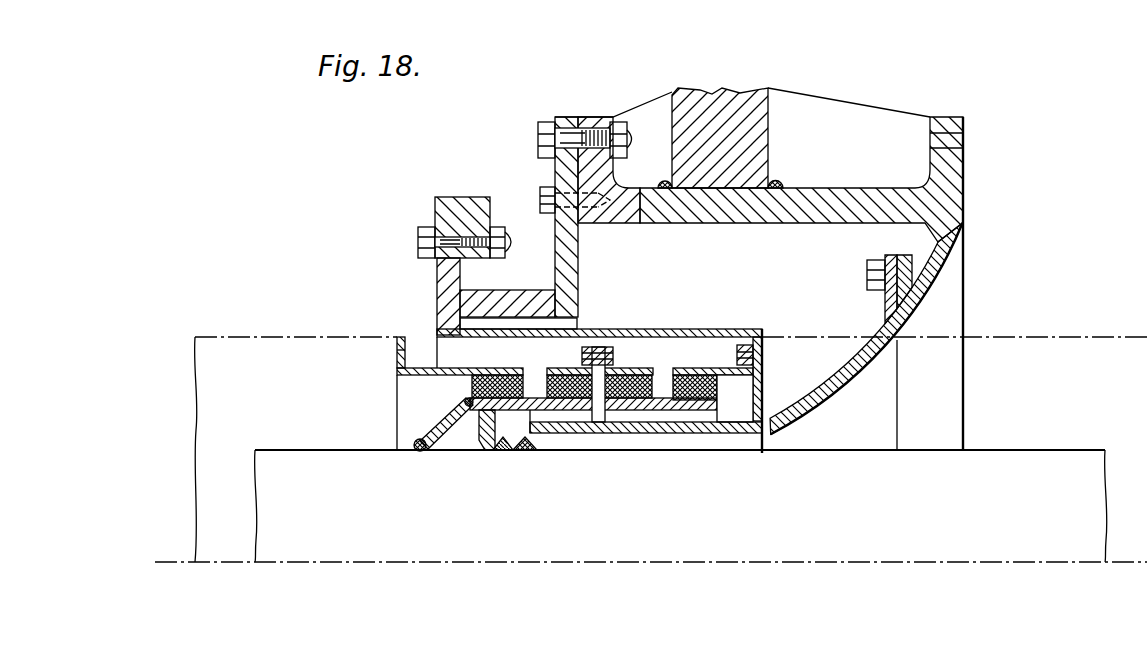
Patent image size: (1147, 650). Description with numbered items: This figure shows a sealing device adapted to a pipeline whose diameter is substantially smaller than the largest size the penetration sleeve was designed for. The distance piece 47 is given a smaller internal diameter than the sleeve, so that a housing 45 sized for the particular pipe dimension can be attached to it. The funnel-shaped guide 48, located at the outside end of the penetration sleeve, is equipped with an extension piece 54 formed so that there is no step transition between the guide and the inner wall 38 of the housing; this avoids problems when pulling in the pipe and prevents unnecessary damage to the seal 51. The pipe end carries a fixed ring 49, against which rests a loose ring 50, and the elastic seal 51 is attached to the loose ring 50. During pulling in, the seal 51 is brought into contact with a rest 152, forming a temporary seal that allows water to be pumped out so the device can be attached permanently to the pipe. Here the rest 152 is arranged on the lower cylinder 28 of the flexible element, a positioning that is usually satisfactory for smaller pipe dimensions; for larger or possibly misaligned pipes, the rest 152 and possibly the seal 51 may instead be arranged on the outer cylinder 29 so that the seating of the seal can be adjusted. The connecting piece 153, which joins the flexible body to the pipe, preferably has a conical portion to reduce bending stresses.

The lower cylinder 28 is at (583, 405).
The outer cylinder 29 is at (417, 362).
The inner wall 38 is at (668, 433).
The housing 45 is at (703, 329).
The distance piece 47 is at (531, 290).
The funnel-shaped guide 48 is at (915, 277).
The fixed ring 49 is at (528, 449).
The loose ring 50 is at (513, 449).
The seal 51 is at (496, 443).
The extension piece 54 is at (832, 397).
The rest 152 is at (470, 449).
The connecting piece 153 is at (427, 448).